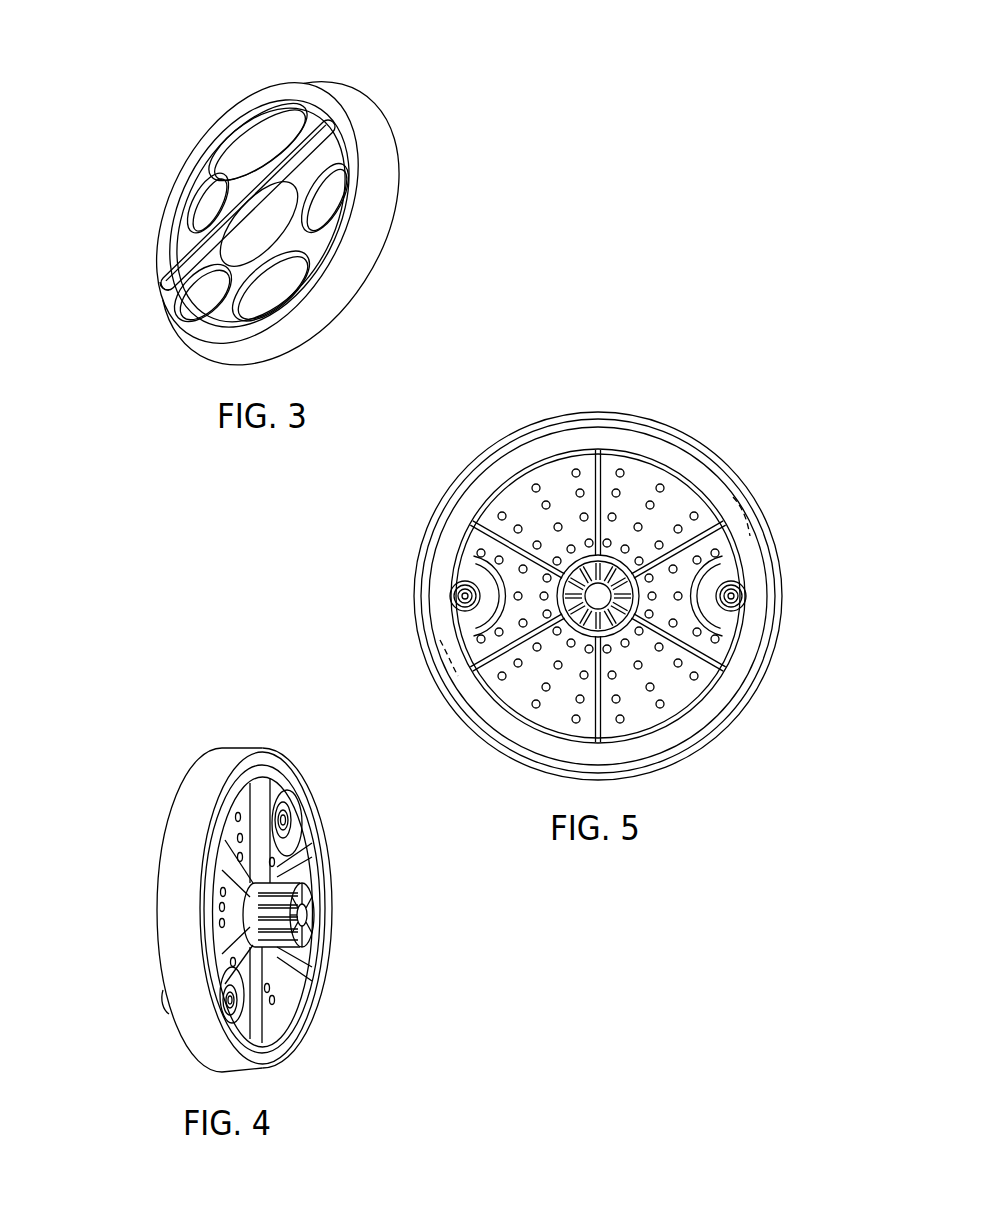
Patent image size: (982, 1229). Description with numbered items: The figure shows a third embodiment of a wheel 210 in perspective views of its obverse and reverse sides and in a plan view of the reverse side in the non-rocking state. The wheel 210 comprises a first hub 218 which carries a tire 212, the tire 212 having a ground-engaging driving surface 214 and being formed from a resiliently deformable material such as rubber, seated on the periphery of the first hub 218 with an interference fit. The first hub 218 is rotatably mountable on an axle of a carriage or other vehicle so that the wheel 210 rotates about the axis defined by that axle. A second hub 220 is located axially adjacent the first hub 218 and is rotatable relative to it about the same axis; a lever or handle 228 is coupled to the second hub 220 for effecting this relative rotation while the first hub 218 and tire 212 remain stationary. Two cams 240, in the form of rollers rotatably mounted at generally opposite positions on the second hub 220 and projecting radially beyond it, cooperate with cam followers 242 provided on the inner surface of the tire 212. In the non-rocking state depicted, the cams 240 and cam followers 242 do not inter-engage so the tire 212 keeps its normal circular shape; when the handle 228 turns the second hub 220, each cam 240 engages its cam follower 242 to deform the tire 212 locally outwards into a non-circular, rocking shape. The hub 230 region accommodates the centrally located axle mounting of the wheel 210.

In FIG. 3, the wheel 210 is at (410, 81).
In FIG. 5, the wheel 210 is at (729, 419).
In FIG. 4, the wheel 210 is at (168, 760).
In FIG. 3, the tire 212 is at (412, 197).
In FIG. 5, the tire 212 is at (416, 668).
In FIG. 4, the tire 212 is at (151, 983).
In FIG. 3, the driving surface 214 is at (353, 257).
In FIG. 5, the driving surface 214 is at (742, 482).
In FIG. 4, the driving surface 214 is at (178, 902).
In FIG. 3, the first hub 218 is at (218, 175).
In FIG. 3, the second hub 220 is at (203, 222).
In FIG. 4, the second hub 220 is at (258, 829).
In FIG. 3, the handle 228 is at (168, 276).
In FIG. 5, the hub 230 is at (593, 587).
In FIG. 5, the cams 240 is at (727, 572).
In FIG. 4, the cams 240 is at (283, 797).
In FIG. 5, the cam followers 242 is at (748, 530).